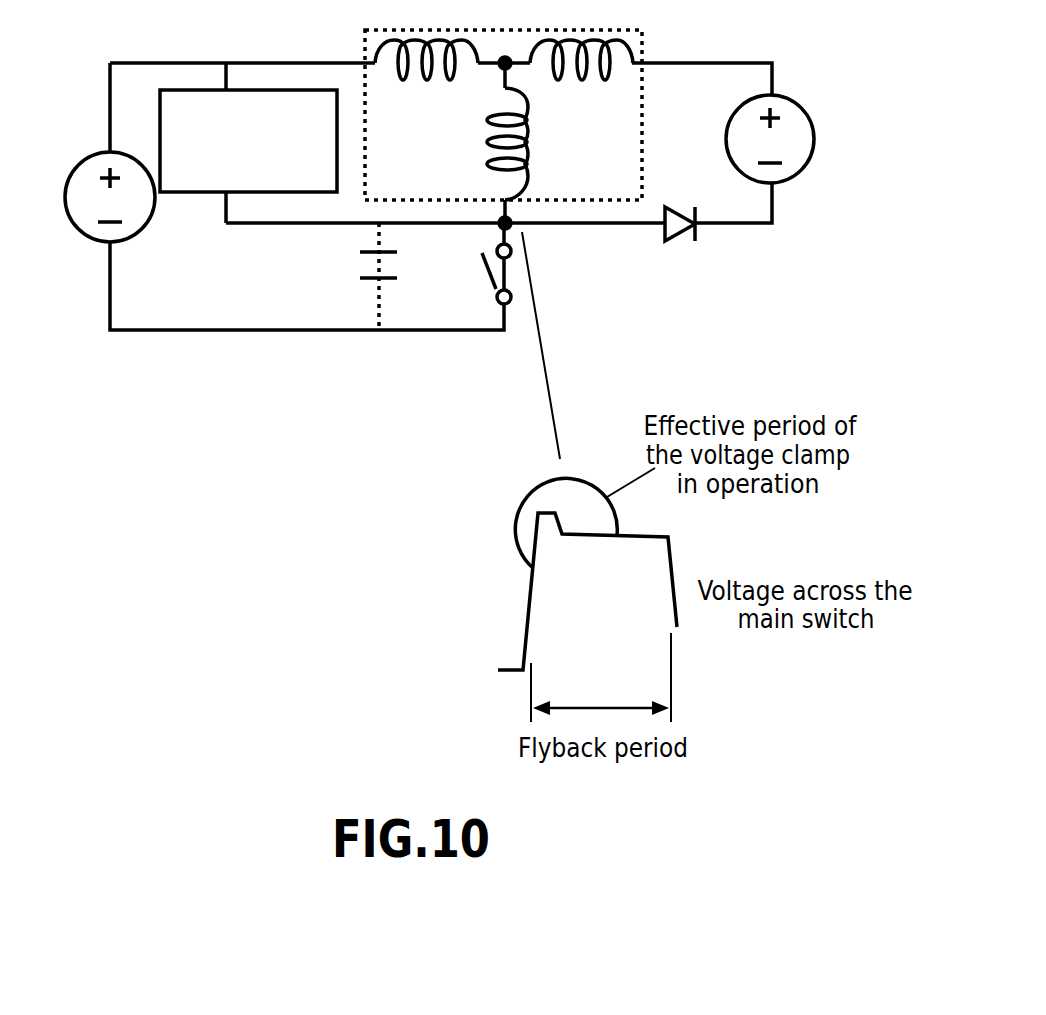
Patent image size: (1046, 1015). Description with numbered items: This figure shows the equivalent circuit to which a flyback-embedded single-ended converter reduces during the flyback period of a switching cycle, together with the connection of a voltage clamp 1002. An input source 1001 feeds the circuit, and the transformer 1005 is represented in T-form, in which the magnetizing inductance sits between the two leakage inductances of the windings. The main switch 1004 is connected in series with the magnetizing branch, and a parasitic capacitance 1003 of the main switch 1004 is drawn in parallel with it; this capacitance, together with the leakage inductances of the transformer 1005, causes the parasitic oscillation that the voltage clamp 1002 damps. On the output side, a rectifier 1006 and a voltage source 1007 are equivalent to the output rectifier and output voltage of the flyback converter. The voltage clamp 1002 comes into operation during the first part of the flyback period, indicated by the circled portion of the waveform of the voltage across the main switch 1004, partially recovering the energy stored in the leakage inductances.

The input voltage source V_IN 1001 is at (92, 150).
The voltage clamp 1002 is at (206, 197).
The parasitic capacitance 1003 is at (357, 267).
The main switch 1004 is at (483, 272).
The transformer 1005 is at (643, 122).
The rectifier 1006 is at (676, 206).
The voltage V_A 1007 is at (808, 120).